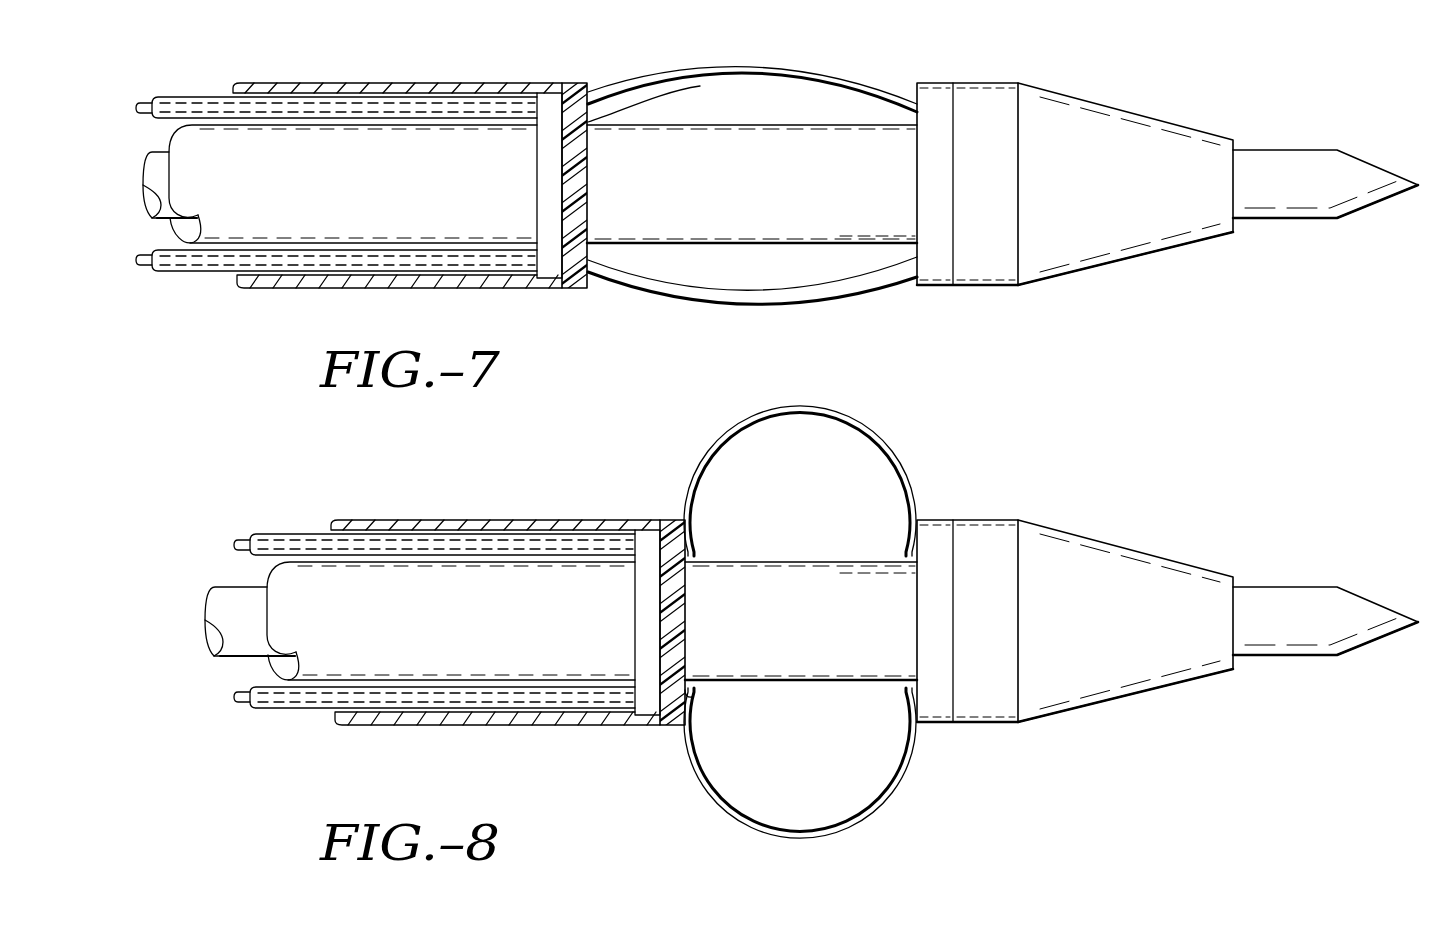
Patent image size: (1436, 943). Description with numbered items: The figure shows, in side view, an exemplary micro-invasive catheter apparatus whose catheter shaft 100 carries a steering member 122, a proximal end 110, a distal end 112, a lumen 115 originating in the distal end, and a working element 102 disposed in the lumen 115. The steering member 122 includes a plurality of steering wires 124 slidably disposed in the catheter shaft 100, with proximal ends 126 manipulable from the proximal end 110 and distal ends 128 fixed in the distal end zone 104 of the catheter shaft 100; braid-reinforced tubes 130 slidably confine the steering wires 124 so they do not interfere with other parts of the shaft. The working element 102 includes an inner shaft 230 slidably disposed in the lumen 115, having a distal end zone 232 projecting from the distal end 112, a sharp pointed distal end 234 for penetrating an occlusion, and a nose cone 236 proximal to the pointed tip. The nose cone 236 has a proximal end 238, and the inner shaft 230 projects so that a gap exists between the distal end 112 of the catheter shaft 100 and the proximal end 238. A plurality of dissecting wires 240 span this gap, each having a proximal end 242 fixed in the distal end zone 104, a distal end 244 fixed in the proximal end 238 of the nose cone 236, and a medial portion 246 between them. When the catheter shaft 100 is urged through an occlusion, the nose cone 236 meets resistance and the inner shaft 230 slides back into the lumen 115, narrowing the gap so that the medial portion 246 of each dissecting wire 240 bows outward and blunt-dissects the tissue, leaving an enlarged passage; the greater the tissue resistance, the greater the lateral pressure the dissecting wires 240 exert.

In FIG. 7, the catheter shaft 100 is at (438, 83).
In FIG. 8, the catheter shaft 100 is at (537, 520).
In FIG. 7, the working element 102 is at (984, 115).
In FIG. 7, the distal end zone 104 is at (565, 290).
In FIG. 8, the distal end zone 104 is at (647, 724).
In FIG. 7, the proximal end 110 is at (237, 86).
In FIG. 8, the proximal end 110 is at (333, 522).
In FIG. 7, the distal end 112 is at (580, 85).
In FIG. 8, the distal end 112 is at (678, 520).
In FIG. 7, the lumen 115 is at (638, 120).
In FIG. 8, the lumen 115 is at (688, 552).
In FIG. 7, the steering member 122 is at (384, 97).
In FIG. 8, the steering member 122 is at (481, 535).
In FIG. 7, the steering wires 124 is at (483, 110).
In FIG. 8, the steering wires 124 is at (580, 547).
In FIG. 7, the proximal ends 126 is at (141, 104).
In FIG. 8, the proximal ends 126 is at (238, 540).
In FIG. 7, the distal ends 128 is at (536, 92).
In FIG. 8, the distal ends 128 is at (628, 530).
In FIG. 7, the braid-reinforced tubes 130 is at (331, 90).
In FIG. 8, the braid-reinforced tubes 130 is at (428, 528).
In FIG. 7, the inner shaft 230 is at (822, 125).
In FIG. 8, the inner shaft 230 is at (823, 562).
In FIG. 7, the distal end zone 232 is at (882, 246).
In FIG. 8, the distal end zone 232 is at (893, 592).
In FIG. 7, the sharp pointed distal end 234 is at (1412, 180).
In FIG. 8, the sharp pointed distal end 234 is at (1412, 617).
In FIG. 7, the nose cone 236 is at (1160, 117).
In FIG. 8, the nose cone 236 is at (1160, 555).
In FIG. 7, the proximal end 238 is at (922, 288).
In FIG. 8, the proximal end 238 is at (920, 724).
In FIG. 7, the dissecting wires 240 is at (637, 290).
In FIG. 7, the proximal end 242 is at (598, 108).
In FIG. 8, the proximal end 242 is at (686, 696).
In FIG. 7, the distal end 244 is at (914, 90).
In FIG. 8, the distal end 244 is at (918, 528).
In FIG. 7, the medial portion 246 is at (754, 68).
In FIG. 8, the medial portion 246 is at (800, 840).